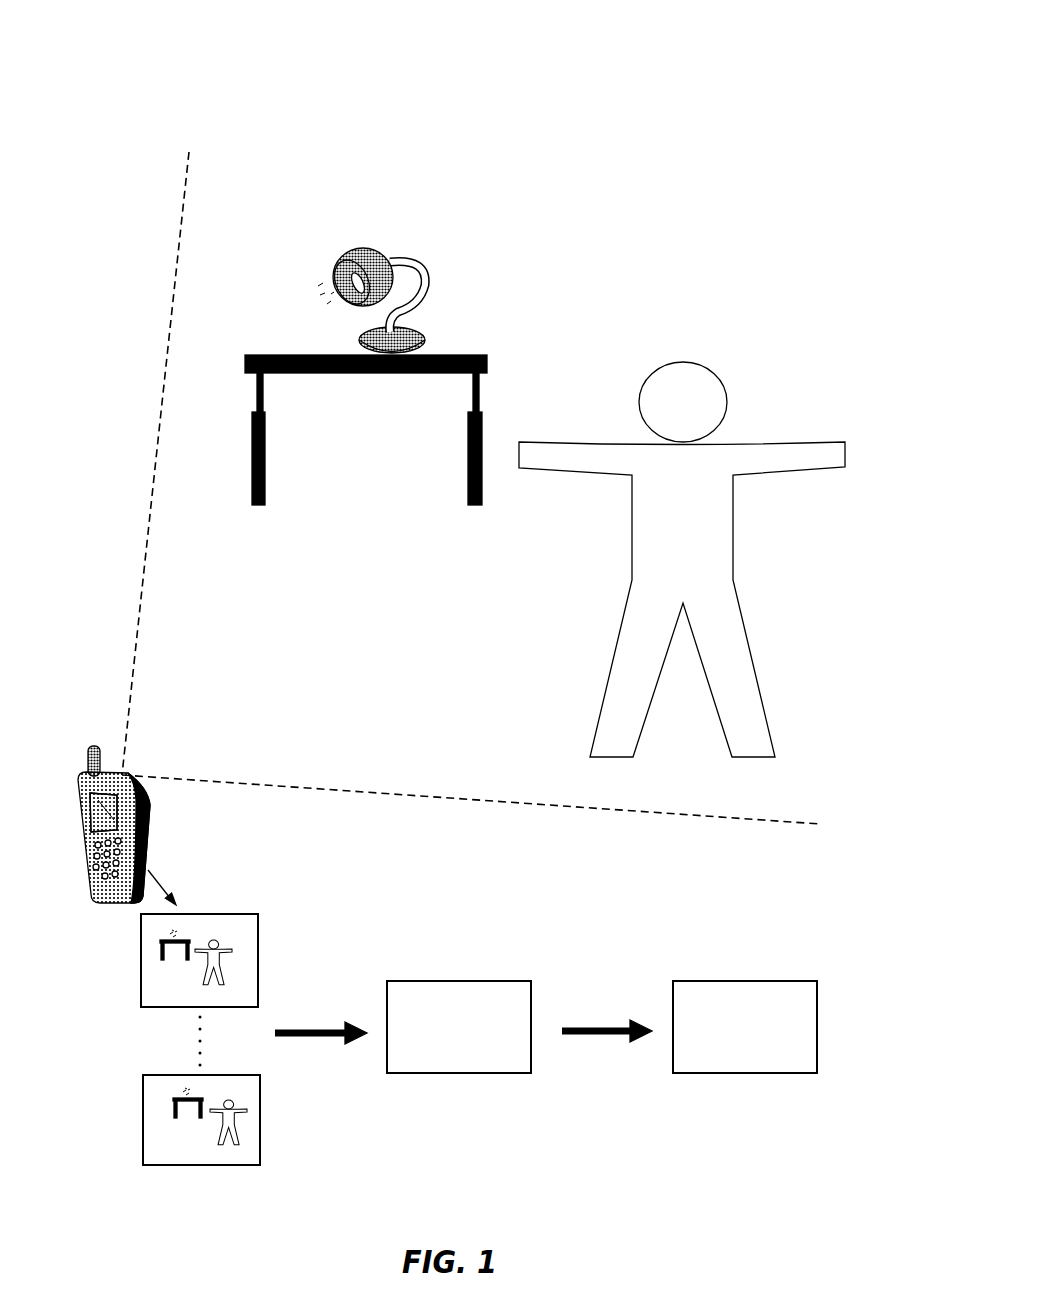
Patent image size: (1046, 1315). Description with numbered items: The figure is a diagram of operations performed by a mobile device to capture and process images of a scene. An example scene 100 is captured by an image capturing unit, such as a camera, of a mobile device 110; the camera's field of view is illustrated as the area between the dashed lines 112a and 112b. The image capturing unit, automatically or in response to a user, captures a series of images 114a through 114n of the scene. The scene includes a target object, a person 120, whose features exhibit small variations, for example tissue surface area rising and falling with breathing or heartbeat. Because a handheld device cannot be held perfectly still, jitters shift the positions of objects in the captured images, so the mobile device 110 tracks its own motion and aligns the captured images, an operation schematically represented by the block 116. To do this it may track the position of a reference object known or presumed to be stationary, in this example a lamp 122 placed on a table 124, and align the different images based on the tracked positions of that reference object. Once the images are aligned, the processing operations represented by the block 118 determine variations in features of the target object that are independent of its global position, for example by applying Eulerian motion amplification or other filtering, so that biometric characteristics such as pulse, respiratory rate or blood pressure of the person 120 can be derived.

The scene 100 is at (651, 38).
The mobile device 110 is at (152, 822).
The dashed line 112a is at (143, 597).
The dashed line 112b is at (337, 790).
The image 114a is at (258, 935).
The image 114n is at (260, 1095).
The block 116 is at (453, 980).
The block 118 is at (728, 980).
The person 120 is at (734, 545).
The lamp 122 is at (372, 248).
The table 124 is at (258, 357).